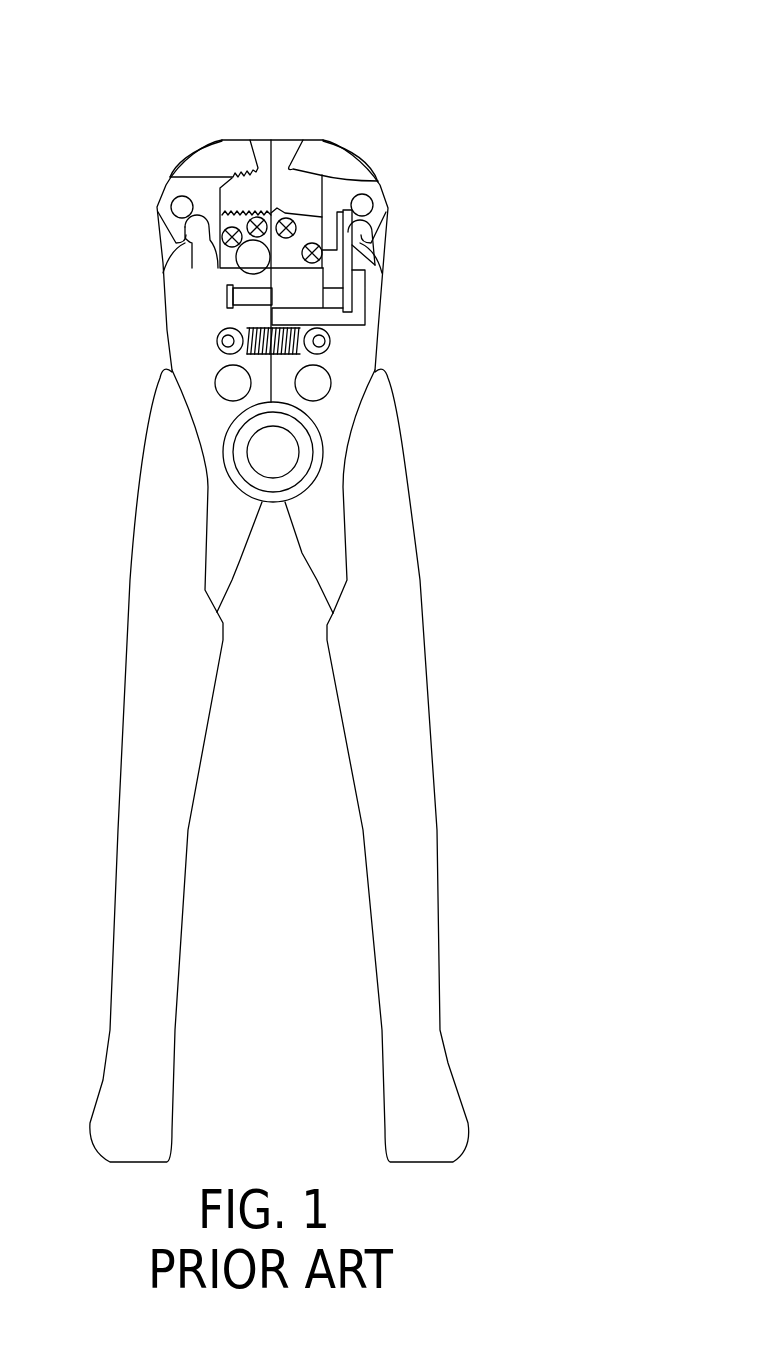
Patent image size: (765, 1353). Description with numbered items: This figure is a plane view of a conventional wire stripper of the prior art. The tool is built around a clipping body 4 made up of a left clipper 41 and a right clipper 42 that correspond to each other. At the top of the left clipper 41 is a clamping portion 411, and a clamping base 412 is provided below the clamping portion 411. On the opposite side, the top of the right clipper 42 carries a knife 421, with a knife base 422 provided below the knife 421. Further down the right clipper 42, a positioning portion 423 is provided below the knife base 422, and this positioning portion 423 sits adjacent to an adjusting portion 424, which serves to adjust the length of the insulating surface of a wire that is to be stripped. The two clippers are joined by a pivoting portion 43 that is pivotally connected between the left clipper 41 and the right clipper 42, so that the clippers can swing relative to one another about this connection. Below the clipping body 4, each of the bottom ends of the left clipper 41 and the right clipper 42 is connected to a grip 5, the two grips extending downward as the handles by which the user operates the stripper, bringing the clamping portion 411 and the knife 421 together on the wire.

The clipping body 4 is at (327, 45).
The left clipper 41 is at (219, 140).
The right clipper 42 is at (319, 140).
The clamping portion 411 is at (202, 161).
The clamping base 412 is at (220, 218).
The knife 421 is at (340, 162).
The knife base 422 is at (313, 233).
The positioning portion 423 is at (308, 297).
The adjusting portion 424 is at (355, 260).
The pivoting portion 43 is at (282, 452).
The grip 5 is at (172, 692).